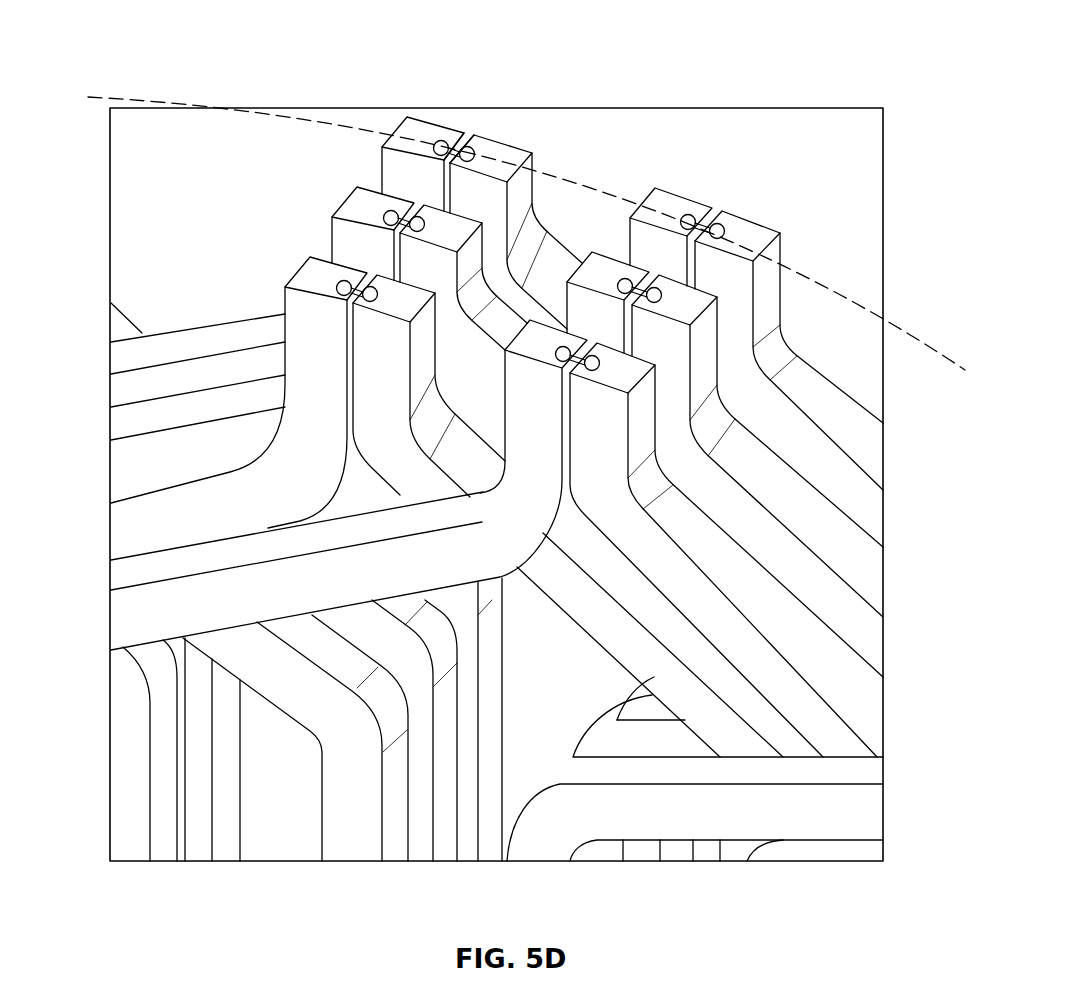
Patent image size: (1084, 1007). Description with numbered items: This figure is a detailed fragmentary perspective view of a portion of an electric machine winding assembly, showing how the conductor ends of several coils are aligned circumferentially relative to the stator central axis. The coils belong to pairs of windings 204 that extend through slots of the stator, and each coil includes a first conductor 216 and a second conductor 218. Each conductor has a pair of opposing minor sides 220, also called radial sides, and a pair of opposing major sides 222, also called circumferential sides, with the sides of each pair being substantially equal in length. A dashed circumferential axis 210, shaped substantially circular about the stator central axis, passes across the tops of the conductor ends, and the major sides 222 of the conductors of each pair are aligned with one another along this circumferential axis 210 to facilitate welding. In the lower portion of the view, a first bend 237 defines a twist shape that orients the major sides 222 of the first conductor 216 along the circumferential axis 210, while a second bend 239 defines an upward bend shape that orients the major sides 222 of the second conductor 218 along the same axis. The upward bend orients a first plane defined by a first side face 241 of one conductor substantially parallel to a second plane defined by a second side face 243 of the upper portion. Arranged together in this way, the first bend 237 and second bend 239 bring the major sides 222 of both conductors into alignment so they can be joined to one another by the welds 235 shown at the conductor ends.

The pairs of windings 204 is at (327, 151).
The circumferential axis 210 is at (120, 97).
The first conductor 216 is at (396, 112).
The second conductor 218 is at (540, 150).
The opposing minor sides 220 is at (393, 120).
The opposing major sides 222 is at (408, 148).
The welds 235 is at (459, 140).
The first bend 237 is at (251, 451).
The second bend 239 is at (384, 466).
The first side face 241 is at (376, 358).
The second side face 243 is at (424, 479).